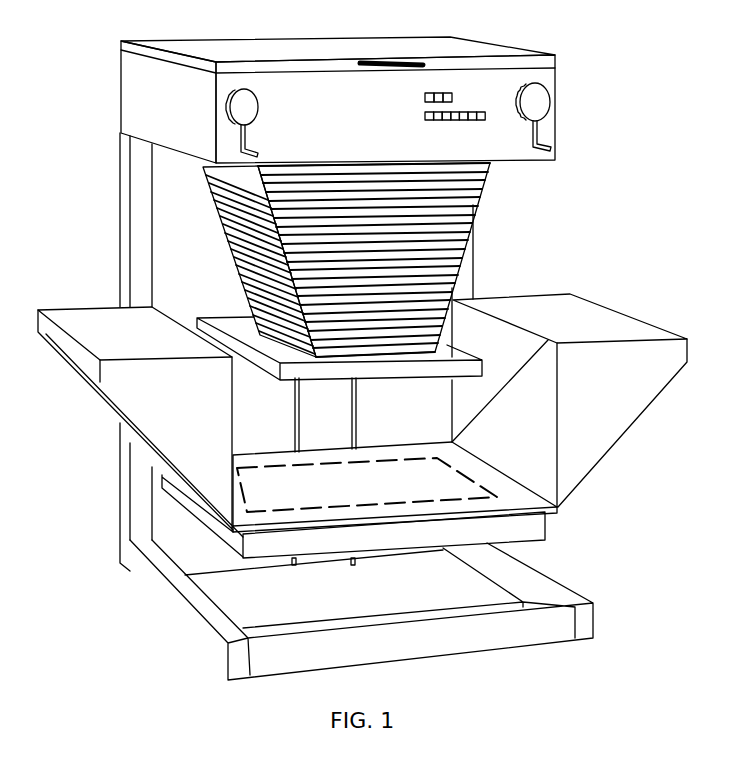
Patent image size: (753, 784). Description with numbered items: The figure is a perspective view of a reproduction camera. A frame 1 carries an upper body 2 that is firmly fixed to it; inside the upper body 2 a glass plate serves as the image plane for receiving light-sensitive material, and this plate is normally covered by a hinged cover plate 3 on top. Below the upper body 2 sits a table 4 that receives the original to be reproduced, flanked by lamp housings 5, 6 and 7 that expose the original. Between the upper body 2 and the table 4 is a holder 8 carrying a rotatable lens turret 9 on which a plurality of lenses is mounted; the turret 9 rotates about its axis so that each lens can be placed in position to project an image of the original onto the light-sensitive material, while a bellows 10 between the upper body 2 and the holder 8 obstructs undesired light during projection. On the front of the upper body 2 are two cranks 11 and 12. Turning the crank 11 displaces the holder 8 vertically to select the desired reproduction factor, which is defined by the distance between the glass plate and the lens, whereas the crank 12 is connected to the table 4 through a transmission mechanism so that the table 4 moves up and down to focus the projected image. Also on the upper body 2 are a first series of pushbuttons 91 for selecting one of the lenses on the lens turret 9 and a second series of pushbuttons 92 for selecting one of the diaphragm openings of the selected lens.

The frame 1 is at (120, 245).
The upper body 2 is at (133, 78).
The hinged cover plate 3 is at (203, 48).
The table 4 is at (540, 498).
The lamp housing 5 is at (117, 383).
The lamp housing 6 is at (648, 395).
The lamp housing 7 is at (537, 537).
The holder 8 is at (222, 322).
The lens turret 9 is at (367, 378).
The bellows 10 is at (215, 190).
The crank 11 is at (252, 113).
The crank 12 is at (543, 103).
The first series of pushbuttons 91 is at (422, 97).
The second series of pushbuttons 92 is at (422, 118).